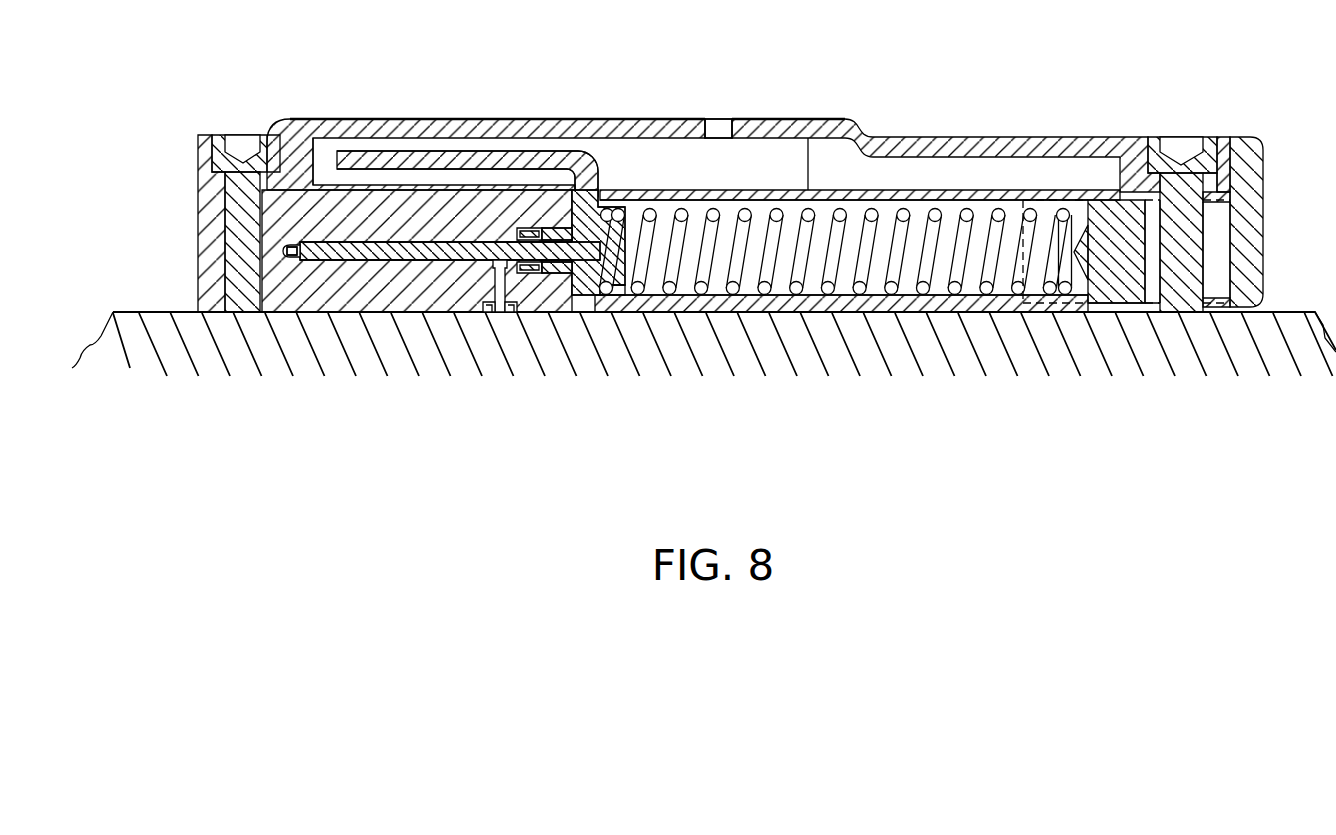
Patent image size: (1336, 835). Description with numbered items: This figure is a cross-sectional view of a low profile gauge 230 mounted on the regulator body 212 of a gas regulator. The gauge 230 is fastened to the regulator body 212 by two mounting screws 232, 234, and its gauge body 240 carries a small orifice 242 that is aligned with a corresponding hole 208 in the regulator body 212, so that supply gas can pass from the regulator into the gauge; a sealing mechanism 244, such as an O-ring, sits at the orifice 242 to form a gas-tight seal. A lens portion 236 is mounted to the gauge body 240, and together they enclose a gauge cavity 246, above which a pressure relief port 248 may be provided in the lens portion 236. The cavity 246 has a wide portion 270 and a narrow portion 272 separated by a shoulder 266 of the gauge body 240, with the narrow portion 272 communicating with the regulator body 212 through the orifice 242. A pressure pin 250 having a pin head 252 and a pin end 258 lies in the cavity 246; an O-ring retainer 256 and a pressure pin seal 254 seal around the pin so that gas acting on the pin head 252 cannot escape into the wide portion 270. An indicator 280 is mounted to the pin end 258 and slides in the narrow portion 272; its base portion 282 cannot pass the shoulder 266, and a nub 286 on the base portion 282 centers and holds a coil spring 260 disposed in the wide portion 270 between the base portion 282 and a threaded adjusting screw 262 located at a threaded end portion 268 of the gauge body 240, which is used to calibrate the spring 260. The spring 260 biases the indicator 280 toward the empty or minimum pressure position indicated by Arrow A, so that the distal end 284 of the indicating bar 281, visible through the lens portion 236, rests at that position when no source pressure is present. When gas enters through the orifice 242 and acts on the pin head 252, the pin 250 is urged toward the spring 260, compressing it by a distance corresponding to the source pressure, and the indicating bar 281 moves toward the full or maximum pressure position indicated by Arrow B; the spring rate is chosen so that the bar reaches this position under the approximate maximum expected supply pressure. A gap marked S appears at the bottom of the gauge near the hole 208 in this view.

The hole 208 is at (489, 317).
The regulator body 212 is at (145, 342).
The low profile gauge 230 is at (1013, 130).
The mounting screw 232 is at (241, 149).
The mounting screw 234 is at (1180, 137).
The lens portion 236 is at (533, 114).
The gauge body 240 is at (1013, 315).
The orifice 242 is at (378, 300).
The sealing mechanism 244 is at (445, 318).
The gauge cavity 246 is at (389, 265).
The pressure relief port 248 is at (718, 133).
The pressure pin 250 is at (351, 264).
The pin head 252 is at (299, 259).
The pressure pin seal 254 is at (528, 278).
The O-ring retainer 256 is at (553, 268).
The pin end 258 is at (590, 290).
The coil spring 260 is at (769, 266).
The threaded adjusting screw 262 is at (1152, 255).
The shoulder 266 is at (575, 272).
The threaded end portion 268 is at (1143, 319).
The wide portion 270 is at (939, 283).
The narrow portion 272 is at (345, 258).
The indicator 280 is at (425, 160).
The indicating bar 281 is at (490, 153).
The base portion 282 is at (602, 188).
The distal end 284 is at (318, 140).
The nub 286 is at (620, 298).
The Arrow A is at (355, 115).
The Arrow B is at (594, 115).
The switch gap S is at (500, 320).